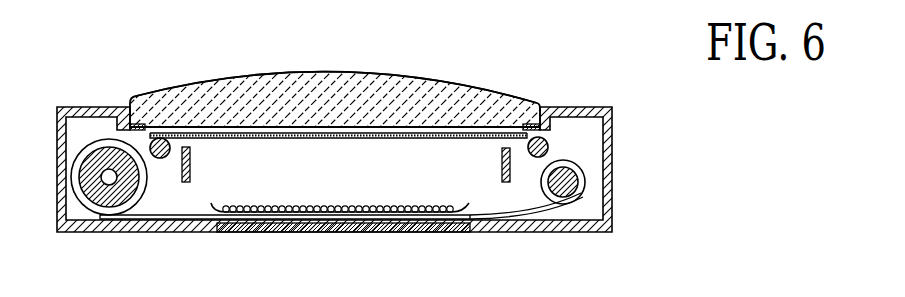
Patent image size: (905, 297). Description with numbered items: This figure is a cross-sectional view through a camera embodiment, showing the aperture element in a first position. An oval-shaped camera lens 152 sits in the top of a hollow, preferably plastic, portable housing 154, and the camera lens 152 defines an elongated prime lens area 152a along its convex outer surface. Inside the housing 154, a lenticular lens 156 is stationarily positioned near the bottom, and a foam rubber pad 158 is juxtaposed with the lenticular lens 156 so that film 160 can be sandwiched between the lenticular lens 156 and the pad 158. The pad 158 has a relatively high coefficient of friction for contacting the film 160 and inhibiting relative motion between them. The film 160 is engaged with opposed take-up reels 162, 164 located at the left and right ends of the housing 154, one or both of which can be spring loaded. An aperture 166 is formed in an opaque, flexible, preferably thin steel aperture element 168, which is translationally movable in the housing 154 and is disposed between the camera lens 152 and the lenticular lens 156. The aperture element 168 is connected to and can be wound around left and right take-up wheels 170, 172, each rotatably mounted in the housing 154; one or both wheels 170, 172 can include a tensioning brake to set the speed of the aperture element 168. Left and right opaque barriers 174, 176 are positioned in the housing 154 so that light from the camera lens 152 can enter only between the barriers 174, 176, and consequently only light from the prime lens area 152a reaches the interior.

The camera lens 152 is at (511, 98).
The prime lens area 152a is at (192, 50).
The portable housing 154 is at (613, 162).
The lenticular lens 156 is at (397, 207).
The foam rubber pad 158 is at (390, 232).
The film 160 is at (537, 203).
The take-up reel 162 is at (101, 192).
The take-up reel 164 is at (582, 186).
The aperture 166 is at (334, 140).
The aperture element 168 is at (224, 140).
The left take-up wheel 170 is at (160, 160).
The right take-up wheel 172 is at (548, 134).
The left opaque barrier 174 is at (186, 184).
The right opaque barrier 176 is at (507, 184).